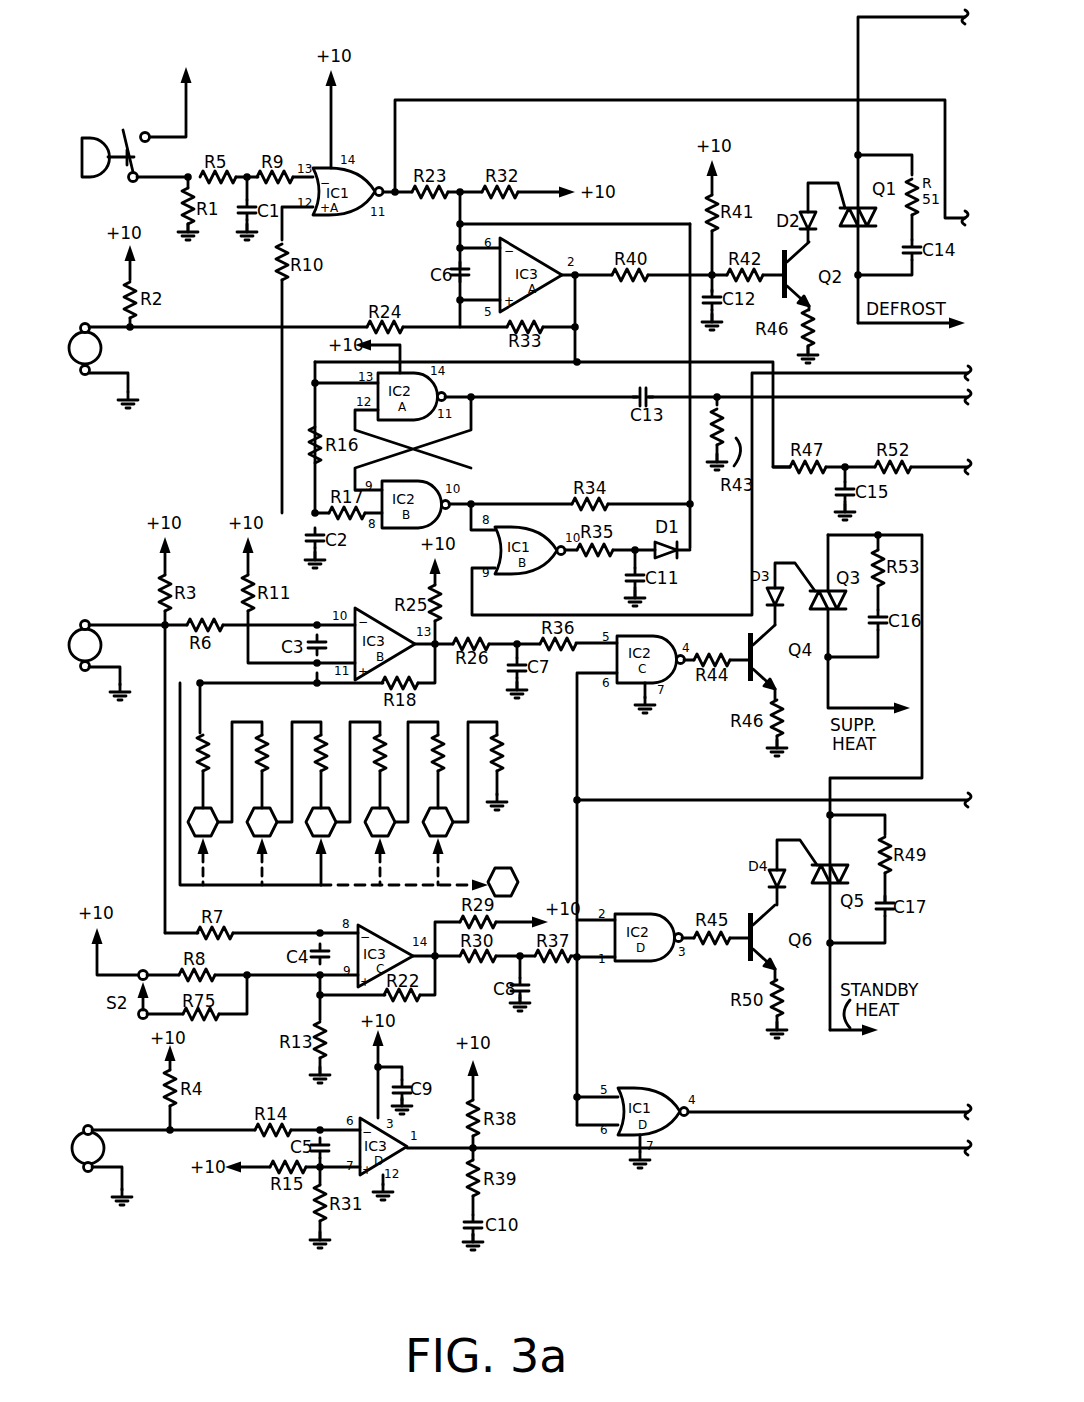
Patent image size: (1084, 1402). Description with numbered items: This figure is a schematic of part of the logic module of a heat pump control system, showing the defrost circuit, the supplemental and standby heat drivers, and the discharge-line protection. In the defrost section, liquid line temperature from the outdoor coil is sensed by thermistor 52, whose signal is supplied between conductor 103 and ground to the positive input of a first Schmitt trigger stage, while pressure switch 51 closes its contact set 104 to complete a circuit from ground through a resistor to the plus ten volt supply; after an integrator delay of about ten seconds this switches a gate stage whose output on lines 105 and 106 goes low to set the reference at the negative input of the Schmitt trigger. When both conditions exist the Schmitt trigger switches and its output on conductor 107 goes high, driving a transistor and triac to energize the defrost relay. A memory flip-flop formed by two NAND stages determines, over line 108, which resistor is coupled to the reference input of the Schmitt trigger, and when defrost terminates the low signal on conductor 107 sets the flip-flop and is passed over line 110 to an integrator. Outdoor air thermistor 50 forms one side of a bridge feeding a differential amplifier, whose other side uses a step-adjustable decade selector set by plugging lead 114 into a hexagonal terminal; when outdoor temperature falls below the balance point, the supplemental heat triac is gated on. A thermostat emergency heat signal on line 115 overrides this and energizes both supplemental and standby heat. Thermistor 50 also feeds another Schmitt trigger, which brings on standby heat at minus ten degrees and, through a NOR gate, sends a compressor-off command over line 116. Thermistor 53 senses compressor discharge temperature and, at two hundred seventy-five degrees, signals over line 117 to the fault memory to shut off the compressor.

The thermistor 50 is at (83, 661).
The pressure switch 51 is at (92, 157).
The thermistor 52 is at (87, 366).
The thermistor 53 is at (84, 1166).
The conductor 103 is at (206, 327).
The contact set 104 is at (132, 118).
The line 105 is at (440, 100).
The line 106 is at (455, 210).
The conductor 107 is at (580, 314).
The line 108 is at (690, 448).
The line 110 is at (616, 362).
The line 114 is at (240, 885).
The line 115 is at (672, 800).
The line 116 is at (884, 1110).
The line 117 is at (886, 1150).